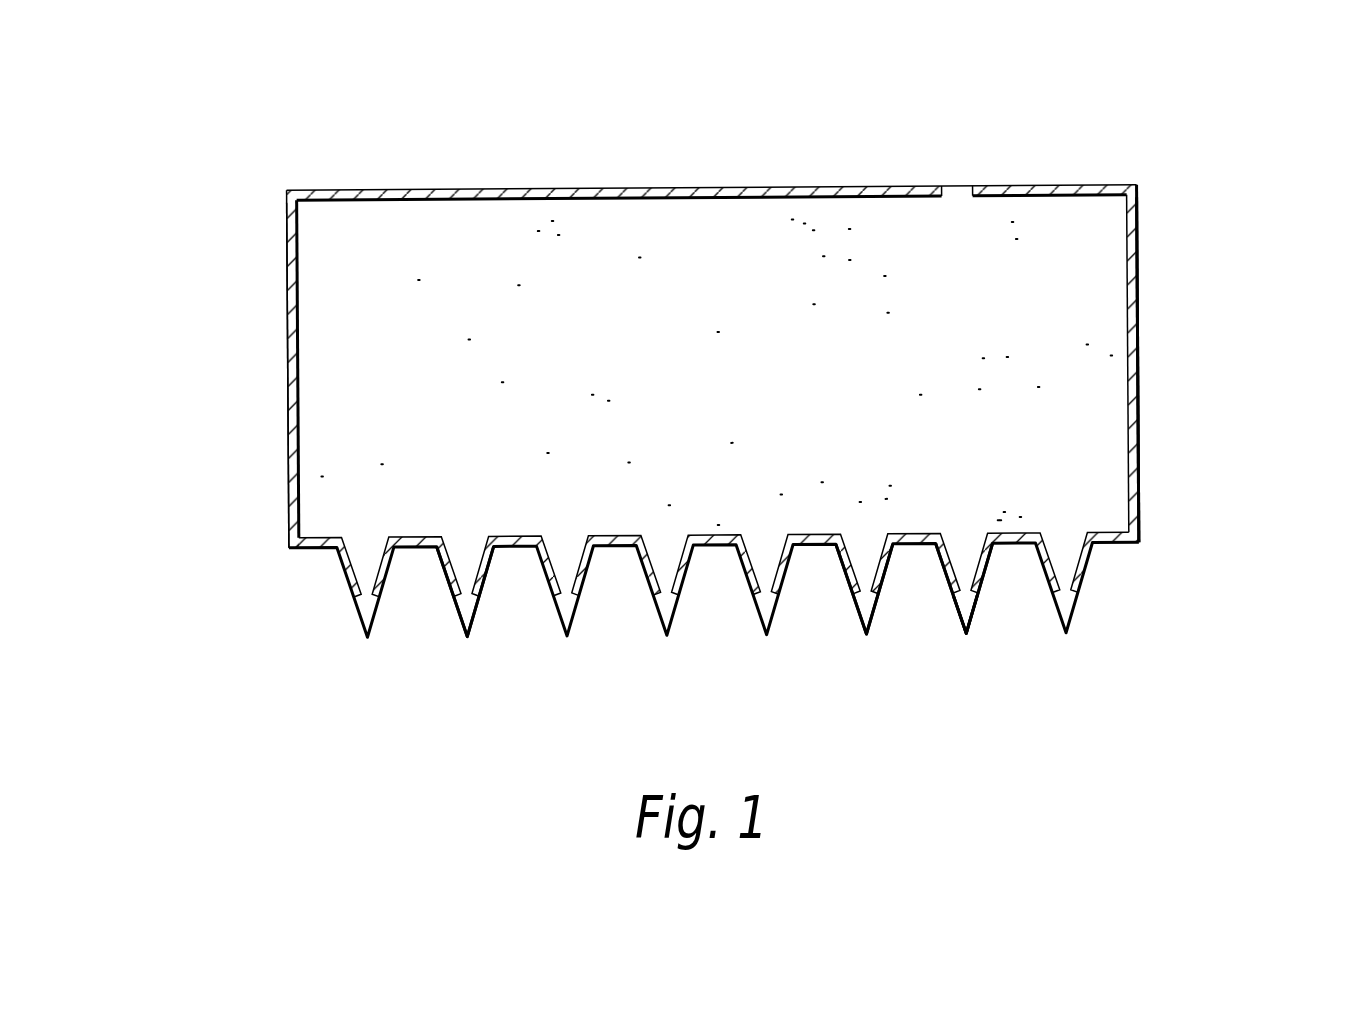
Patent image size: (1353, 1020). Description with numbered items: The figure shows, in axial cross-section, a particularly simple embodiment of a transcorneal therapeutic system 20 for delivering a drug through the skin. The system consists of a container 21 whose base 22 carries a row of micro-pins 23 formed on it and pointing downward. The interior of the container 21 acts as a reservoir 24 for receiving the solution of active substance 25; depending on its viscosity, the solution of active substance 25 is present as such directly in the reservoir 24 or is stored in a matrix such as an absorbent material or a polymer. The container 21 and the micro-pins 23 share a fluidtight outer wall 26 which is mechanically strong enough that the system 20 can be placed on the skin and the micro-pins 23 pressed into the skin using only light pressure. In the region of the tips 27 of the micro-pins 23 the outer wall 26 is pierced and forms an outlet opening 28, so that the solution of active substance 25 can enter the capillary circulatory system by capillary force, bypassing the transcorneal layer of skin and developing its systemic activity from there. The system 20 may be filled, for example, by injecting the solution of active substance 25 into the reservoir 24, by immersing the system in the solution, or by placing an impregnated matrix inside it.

The transcorneal system 20 is at (1183, 402).
The container 21 is at (1142, 485).
The base 22 is at (504, 570).
The micro-pins 23 is at (973, 180).
The reservoir 24 is at (320, 300).
The solution of active substance 25 is at (360, 432).
The outer wall 26 is at (290, 541).
The tips 27 is at (965, 633).
The outlet opening 28 is at (465, 612).